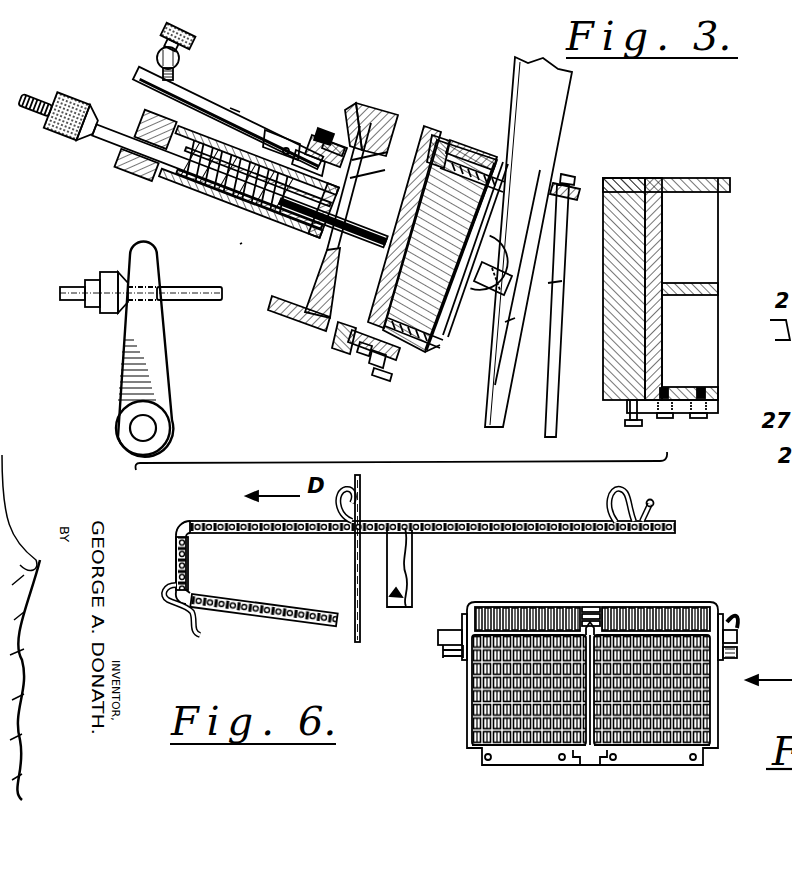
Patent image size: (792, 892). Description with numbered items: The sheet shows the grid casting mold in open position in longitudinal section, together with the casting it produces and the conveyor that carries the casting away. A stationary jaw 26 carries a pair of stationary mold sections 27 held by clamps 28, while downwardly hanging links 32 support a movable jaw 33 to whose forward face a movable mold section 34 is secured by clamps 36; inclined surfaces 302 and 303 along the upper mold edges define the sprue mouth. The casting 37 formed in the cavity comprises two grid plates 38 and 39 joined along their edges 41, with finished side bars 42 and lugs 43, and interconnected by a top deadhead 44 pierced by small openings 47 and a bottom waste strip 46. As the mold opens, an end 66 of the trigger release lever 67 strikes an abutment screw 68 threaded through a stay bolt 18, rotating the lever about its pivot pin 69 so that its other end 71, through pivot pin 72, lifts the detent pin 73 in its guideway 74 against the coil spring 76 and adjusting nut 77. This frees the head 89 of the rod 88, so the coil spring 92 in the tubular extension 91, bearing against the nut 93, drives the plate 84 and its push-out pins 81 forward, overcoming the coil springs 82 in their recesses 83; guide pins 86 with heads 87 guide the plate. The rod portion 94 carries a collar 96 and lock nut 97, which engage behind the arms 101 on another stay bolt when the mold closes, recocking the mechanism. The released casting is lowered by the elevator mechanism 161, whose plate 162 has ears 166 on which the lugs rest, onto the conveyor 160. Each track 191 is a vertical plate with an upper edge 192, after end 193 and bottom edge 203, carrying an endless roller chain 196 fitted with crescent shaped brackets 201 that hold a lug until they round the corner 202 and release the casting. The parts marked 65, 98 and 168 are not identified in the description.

In FIG. 3, the stay bolts 18 is at (157, 59).
In FIG. 3, the stationary jaw 26 is at (712, 237).
In FIG. 3, the stationary mold sections 27 is at (660, 181).
In FIG. 3, the clamps 28 is at (652, 414).
In FIG. 3, the links 32 is at (553, 92).
In FIG. 3, the movable jaw 33 is at (396, 118).
In FIG. 3, the movable mold section 34 is at (563, 174).
In FIG. 3, the clamps 36 is at (352, 360).
In FIG. 3, the casting 37 is at (490, 386).
In FIG. 5, the casting 37 is at (455, 751).
In FIG. 5, the battery grid plate 38 is at (475, 691).
In FIG. 5, the battery grid plate 39 is at (698, 701).
In FIG. 5, the edges 41 is at (586, 738).
In FIG. 5, the outermost side bars 42 is at (472, 711).
In FIG. 5, the lugs 43 is at (450, 628).
In FIG. 5, the top deadhead 44 is at (703, 603).
In FIG. 5, the bottom waste strip 46 is at (668, 760).
In FIG. 5, the small openings 47 is at (616, 648).
In FIG. 3, the actuator assembly 65 is at (240, 244).
In FIG. 3, the end of trigger release lever 66 is at (204, 96).
In FIG. 3, the trigger release lever 67 is at (237, 102).
In FIG. 3, the abutment screw 68 is at (163, 30).
In FIG. 3, the pivot pin 69 is at (280, 133).
In FIG. 3, the other end of lever 71 is at (310, 153).
In FIG. 3, the pivot pin 72 is at (270, 218).
In FIG. 3, the detent pin 73 is at (382, 169).
In FIG. 3, the guideway 74 is at (322, 130).
In FIG. 3, the coil spring 76 is at (384, 152).
In FIG. 3, the adjusting nut 77 is at (333, 138).
In FIG. 3, the push-out pins 81 is at (445, 338).
In FIG. 3, the coil springs 82 is at (428, 351).
In FIG. 3, the recess 83 is at (446, 299).
In FIG. 3, the plate 84 is at (384, 280).
In FIG. 3, the guide pins 86 is at (462, 142).
In FIG. 3, the heads 87 is at (440, 134).
In FIG. 3, the rod 88 is at (380, 222).
In FIG. 3, the head 89 is at (303, 264).
In FIG. 3, the tubular extension 91 is at (226, 202).
In FIG. 3, the coil spring 92 is at (178, 190).
In FIG. 3, the nut 93 is at (130, 162).
In FIG. 3, the portion of rod 94 is at (118, 140).
In FIG. 3, the collar 96 is at (74, 100).
In FIG. 3, the lock nut 97 is at (44, 116).
In FIG. 3, the lever boss 98 is at (130, 428).
In FIG. 3, the arms 101 is at (131, 339).
In FIG. 6, the conveyor 160 is at (522, 515).
In FIG. 3, the elevator mechanism 161 is at (600, 160).
In FIG. 3, the plate 162 is at (515, 320).
In FIG. 3, the ears 166 is at (510, 276).
In FIG. 3, the bar 168 is at (574, 281).
In FIG. 6, the tracks 191 is at (393, 600).
In FIG. 6, the upper edge 192 is at (413, 550).
In FIG. 6, the after end 193 is at (192, 560).
In FIG. 6, the roller chain 196 is at (204, 520).
In FIG. 5, the roller chain 196 is at (738, 653).
In FIG. 6, the crescent shaped brackets 201 is at (366, 516).
In FIG. 5, the crescent shaped brackets 201 is at (730, 622).
In FIG. 6, the corner 202 is at (200, 618).
In FIG. 6, the bottom edge 203 is at (320, 602).
In FIG. 3, the inclined surface 302 is at (608, 178).
In FIG. 3, the inclined surface 303 is at (517, 174).